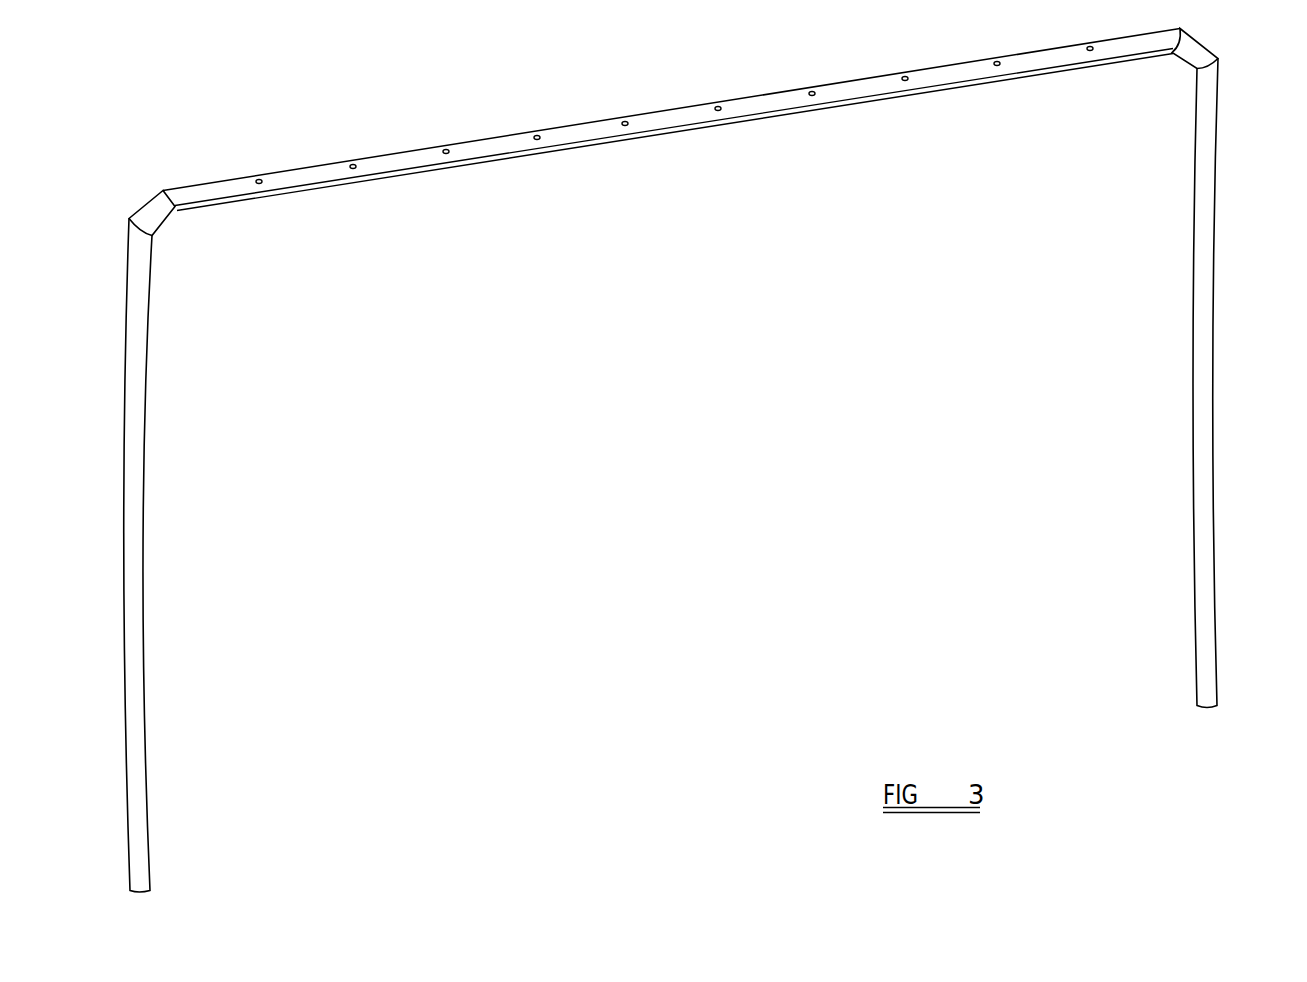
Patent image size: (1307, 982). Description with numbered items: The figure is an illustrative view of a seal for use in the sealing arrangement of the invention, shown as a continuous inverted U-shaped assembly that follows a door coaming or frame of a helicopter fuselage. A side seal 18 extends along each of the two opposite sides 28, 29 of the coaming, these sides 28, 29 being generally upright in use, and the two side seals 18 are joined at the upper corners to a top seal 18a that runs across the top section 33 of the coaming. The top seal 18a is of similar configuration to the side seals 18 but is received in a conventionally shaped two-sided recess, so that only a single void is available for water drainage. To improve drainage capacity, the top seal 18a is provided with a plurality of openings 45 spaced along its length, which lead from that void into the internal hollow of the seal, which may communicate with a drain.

The seal 18 is at (711, 461).
The top seal 18a is at (582, 133).
The openings 45 is at (903, 80).
The top section 33 is at (671, 141).
The side 28 is at (192, 556).
The side 29 is at (1245, 383).